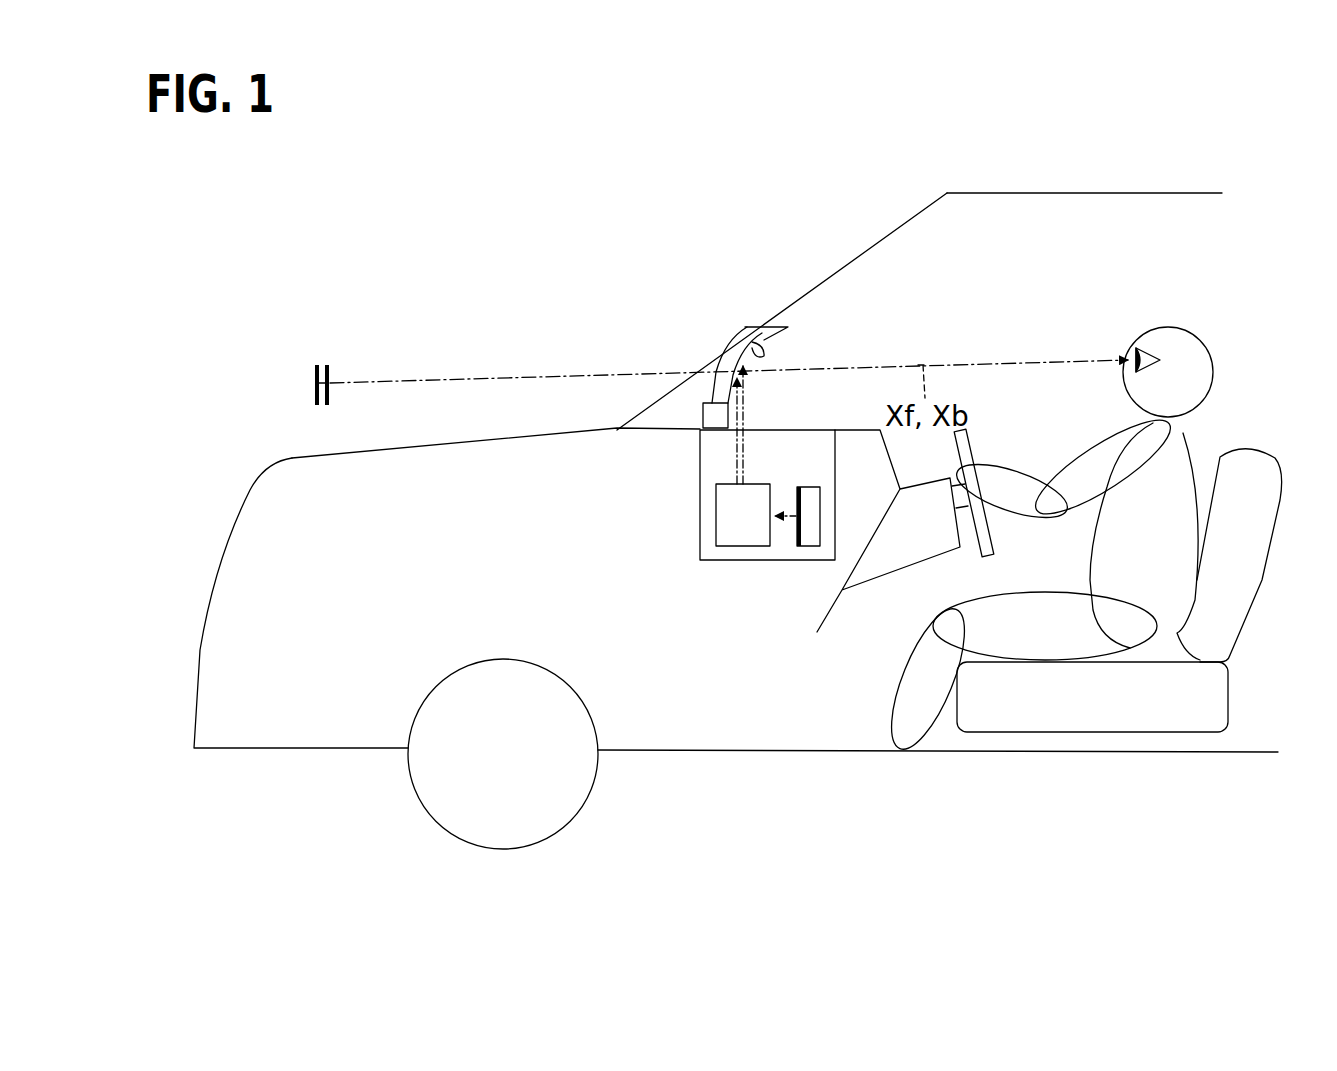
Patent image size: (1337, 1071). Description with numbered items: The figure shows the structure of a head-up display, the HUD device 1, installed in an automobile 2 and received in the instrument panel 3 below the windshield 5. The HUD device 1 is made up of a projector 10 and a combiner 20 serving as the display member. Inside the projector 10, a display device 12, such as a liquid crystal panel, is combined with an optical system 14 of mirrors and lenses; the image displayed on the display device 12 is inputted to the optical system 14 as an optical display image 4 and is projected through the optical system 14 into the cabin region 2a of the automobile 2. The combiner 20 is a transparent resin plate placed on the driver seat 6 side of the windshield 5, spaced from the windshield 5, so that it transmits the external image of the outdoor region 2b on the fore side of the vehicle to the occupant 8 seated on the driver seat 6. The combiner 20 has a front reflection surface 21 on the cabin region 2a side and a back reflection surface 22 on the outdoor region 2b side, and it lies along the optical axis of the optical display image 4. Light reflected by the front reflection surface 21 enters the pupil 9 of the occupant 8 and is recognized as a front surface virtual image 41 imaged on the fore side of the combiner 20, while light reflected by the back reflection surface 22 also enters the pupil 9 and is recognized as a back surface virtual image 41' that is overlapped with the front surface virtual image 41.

The HUD device 1 is at (688, 384).
The automobile 2 is at (1182, 193).
The cabin region 2a is at (977, 268).
The outdoor region 2b is at (459, 268).
The instrument panel 3 is at (652, 428).
The optical display image 4 is at (795, 542).
The windshield 5 is at (840, 252).
The driver seat 6 is at (1240, 465).
The occupant 8 is at (1183, 437).
The pupil 9 is at (1135, 348).
The projector 10 is at (831, 566).
The display device 12 is at (813, 540).
The optical system 14 is at (728, 537).
The combiner 20 is at (767, 322).
The front reflection surface 21 is at (742, 324).
The back reflection surface 22 is at (738, 331).
The front surface virtual image 41 is at (290, 354).
The back surface virtual image 41' is at (356, 350).